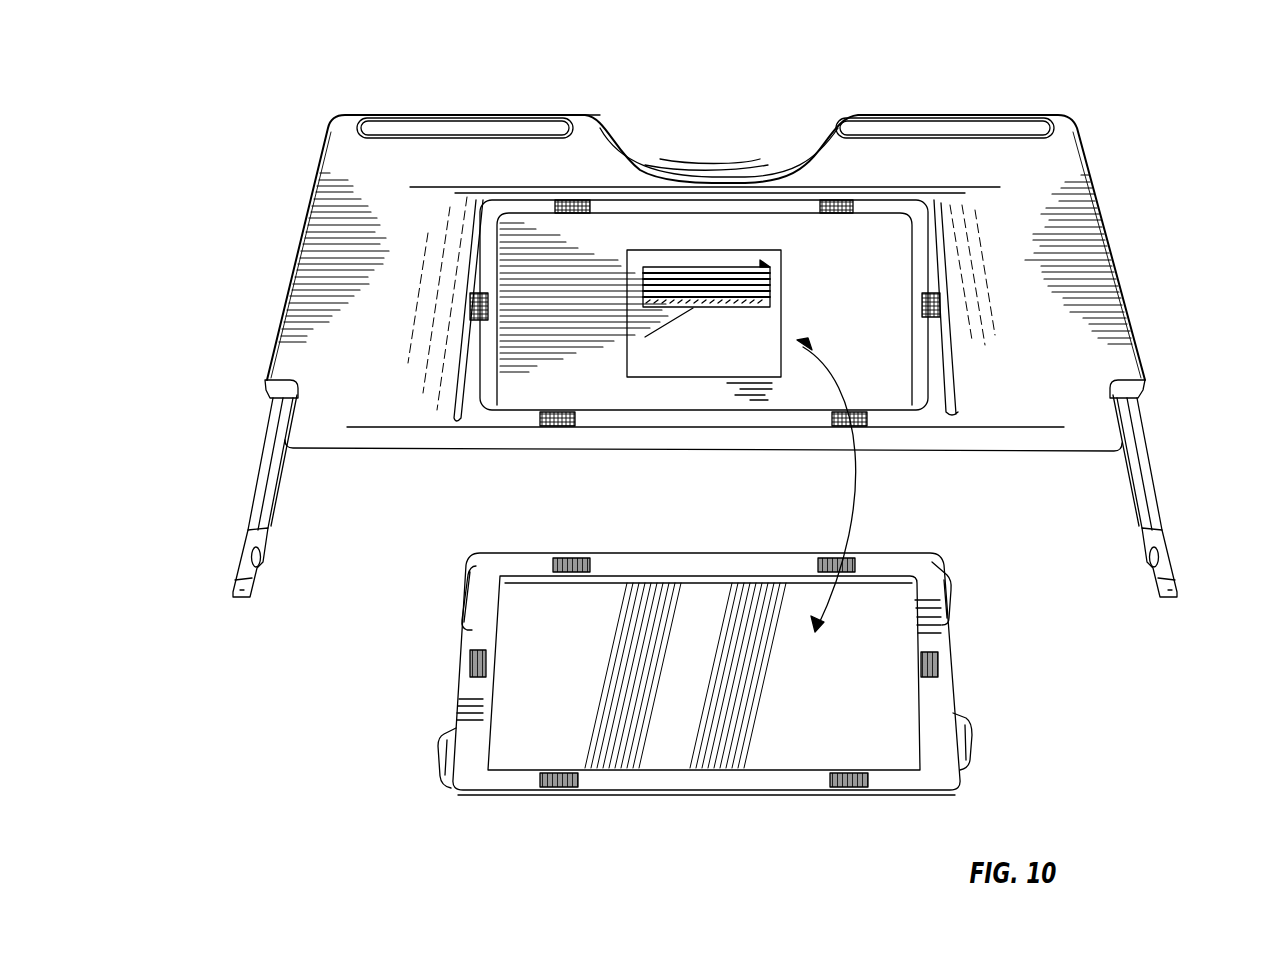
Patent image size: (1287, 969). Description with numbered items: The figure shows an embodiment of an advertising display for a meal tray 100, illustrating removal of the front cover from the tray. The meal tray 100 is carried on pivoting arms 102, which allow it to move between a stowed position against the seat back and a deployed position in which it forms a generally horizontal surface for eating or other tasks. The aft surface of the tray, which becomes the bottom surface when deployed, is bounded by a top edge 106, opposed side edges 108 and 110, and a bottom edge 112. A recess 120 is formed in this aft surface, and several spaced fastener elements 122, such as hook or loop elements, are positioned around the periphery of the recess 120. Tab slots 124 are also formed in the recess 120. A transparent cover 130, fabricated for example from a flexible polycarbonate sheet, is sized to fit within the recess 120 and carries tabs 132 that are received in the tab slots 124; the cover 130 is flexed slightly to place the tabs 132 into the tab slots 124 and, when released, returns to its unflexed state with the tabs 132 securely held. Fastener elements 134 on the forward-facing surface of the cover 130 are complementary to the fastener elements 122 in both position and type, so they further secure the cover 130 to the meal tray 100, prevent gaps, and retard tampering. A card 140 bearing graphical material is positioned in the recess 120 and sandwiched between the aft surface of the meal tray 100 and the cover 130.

The meal tray 100 is at (424, 108).
The pivoting arms 102 is at (248, 517).
The top edge 106 is at (575, 118).
The side edge 108 is at (295, 246).
The side edge 110 is at (1122, 287).
The bottom edge 112 is at (422, 458).
The recess 120 is at (936, 288).
The fastener elements 122 is at (832, 200).
The tab slots 124 is at (478, 221).
The transparent cover 130 is at (690, 735).
The tabs 132 is at (440, 756).
The fastener elements 134 is at (832, 556).
The card 140 is at (872, 365).